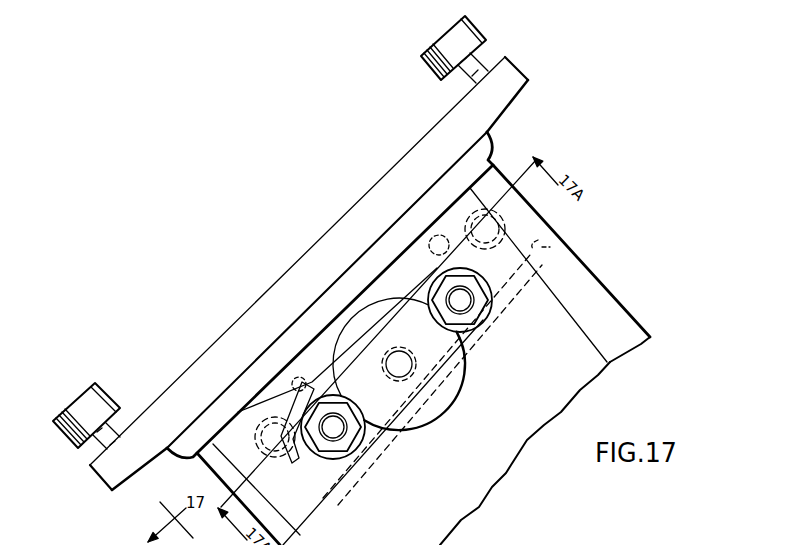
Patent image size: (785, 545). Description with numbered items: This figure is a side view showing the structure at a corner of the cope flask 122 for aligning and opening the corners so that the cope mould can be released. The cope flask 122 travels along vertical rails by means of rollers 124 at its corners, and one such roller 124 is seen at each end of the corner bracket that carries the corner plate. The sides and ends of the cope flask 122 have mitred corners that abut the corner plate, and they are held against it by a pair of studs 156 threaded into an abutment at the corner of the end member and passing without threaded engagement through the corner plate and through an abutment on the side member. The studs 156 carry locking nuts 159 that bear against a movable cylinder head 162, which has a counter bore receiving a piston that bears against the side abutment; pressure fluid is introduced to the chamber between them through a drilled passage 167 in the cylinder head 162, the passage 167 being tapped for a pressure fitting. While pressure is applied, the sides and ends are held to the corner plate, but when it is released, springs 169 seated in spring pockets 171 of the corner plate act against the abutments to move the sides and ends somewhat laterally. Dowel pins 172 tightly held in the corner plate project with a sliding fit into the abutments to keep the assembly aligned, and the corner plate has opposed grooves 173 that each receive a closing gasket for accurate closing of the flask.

The cope flask 122 is at (628, 173).
The rollers 124 is at (480, 44).
The studs 156 is at (483, 318).
The locking nuts 159 is at (343, 450).
The cylinder head 162 is at (445, 420).
The drilled passage 167 is at (398, 378).
The springs 169 is at (472, 212).
The spring pockets 171 is at (492, 212).
The dowel pins 172 is at (428, 241).
The grooves 173 is at (552, 248).